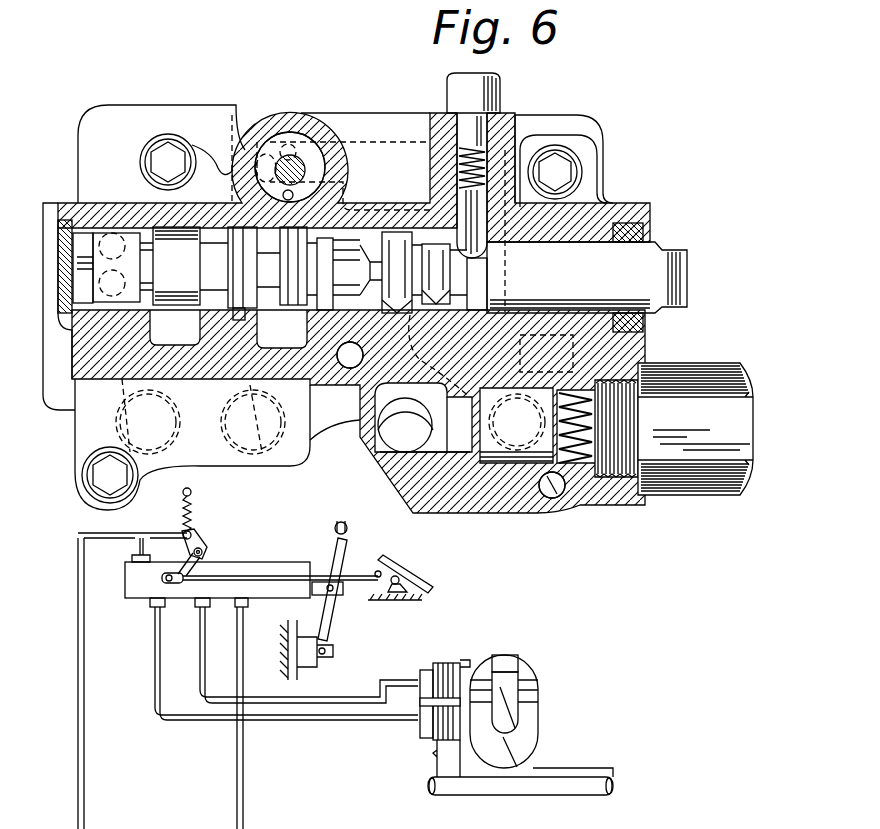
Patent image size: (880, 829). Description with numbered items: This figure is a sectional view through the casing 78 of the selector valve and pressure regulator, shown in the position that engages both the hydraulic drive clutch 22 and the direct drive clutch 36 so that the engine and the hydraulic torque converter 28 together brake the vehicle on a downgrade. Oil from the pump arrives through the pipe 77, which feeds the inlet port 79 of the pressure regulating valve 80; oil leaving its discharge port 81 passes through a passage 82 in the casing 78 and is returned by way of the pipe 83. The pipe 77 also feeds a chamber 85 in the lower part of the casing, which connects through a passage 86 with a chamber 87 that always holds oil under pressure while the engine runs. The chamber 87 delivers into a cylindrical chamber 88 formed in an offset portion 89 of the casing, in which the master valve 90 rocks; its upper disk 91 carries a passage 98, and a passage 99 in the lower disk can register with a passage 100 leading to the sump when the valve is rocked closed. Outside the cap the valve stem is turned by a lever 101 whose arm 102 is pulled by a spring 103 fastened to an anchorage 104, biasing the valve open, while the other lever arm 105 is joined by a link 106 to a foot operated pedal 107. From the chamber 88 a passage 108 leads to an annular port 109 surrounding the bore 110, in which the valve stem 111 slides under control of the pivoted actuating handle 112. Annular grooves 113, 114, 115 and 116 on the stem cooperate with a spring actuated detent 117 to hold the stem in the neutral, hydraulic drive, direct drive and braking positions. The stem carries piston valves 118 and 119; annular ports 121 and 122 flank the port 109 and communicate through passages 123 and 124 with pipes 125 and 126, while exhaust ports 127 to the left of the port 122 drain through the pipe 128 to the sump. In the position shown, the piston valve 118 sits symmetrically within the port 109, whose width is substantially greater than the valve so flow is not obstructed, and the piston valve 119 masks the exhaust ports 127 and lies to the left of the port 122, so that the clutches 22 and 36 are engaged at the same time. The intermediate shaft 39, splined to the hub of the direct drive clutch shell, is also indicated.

The hydraulic drive clutch 22 is at (450, 662).
The hydraulic torque converter 28 is at (517, 657).
The direct drive clutch 36 is at (433, 747).
The intermediate shaft 39 is at (560, 787).
The pipe 77 is at (390, 435).
The casing 78 is at (635, 214).
The inlet port 79 is at (445, 437).
The pressure regulating valve 80 is at (482, 460).
The discharge port 81 is at (513, 463).
The passage 82 is at (578, 373).
The pipe 83 is at (557, 500).
The chamber 85 is at (363, 354).
The passage 86 is at (475, 395).
The chamber 87 is at (393, 142).
The cylindrical chamber 88 is at (290, 150).
The offset portion 89 is at (343, 175).
The master valve 90 is at (359, 160).
The upper disk 91 is at (268, 150).
The passage 98 is at (345, 196).
The passage 99 is at (346, 142).
The passage 100 is at (208, 186).
The lever 101 is at (214, 566).
The lever arm 102 is at (204, 540).
The spring 103 is at (193, 510).
The anchorage 104 is at (192, 490).
The lever arm 105 is at (165, 578).
The link 106 is at (236, 583).
The foot operated pedal 107 is at (403, 567).
The passage 108 is at (232, 115).
The annular port 109 is at (239, 320).
The bore 110 is at (88, 228).
The valve stem 111 is at (660, 243).
The pivoted actuating handle 112 is at (348, 539).
The annular groove 113 is at (351, 303).
The annular groove 114 is at (397, 272).
The annular groove 115 is at (436, 277).
The annular groove 116 is at (474, 284).
The spring actuated detent 117 is at (505, 180).
The piston valve 118 is at (270, 268).
The piston valve 119 is at (143, 273).
The annular port 121 is at (286, 334).
The annular port 122 is at (174, 333).
The passage 123 is at (292, 400).
The passage 124 is at (125, 384).
The pipe 125 is at (300, 458).
The pipe 126 is at (200, 424).
The exhaust ports 127 is at (158, 251).
The pipe 128 is at (116, 533).